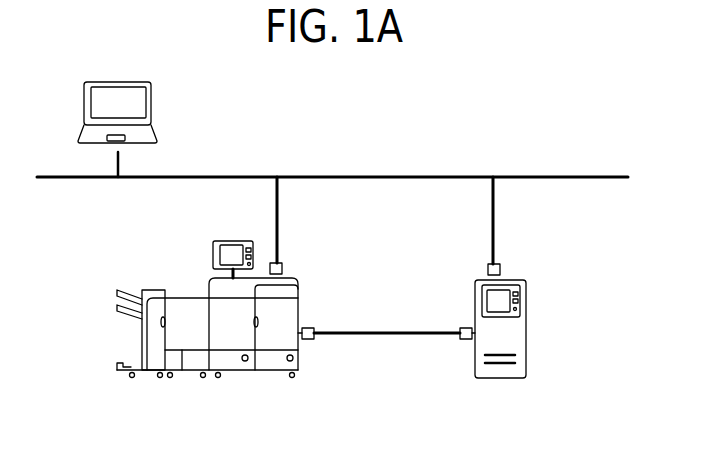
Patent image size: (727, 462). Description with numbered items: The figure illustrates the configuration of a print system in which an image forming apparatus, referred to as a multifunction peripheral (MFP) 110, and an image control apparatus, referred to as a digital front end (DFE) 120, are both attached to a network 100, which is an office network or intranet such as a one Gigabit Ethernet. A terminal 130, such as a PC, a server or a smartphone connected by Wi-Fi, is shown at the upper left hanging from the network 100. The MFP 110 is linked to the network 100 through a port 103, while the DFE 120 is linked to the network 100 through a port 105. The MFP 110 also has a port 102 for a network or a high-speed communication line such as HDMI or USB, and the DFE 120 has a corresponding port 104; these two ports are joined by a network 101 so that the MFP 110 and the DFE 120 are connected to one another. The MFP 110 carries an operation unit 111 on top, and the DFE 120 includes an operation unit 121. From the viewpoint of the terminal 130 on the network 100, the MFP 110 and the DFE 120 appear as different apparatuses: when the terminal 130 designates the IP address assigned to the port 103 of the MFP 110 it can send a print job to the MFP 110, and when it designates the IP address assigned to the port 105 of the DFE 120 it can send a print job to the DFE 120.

The network 100 is at (565, 177).
The network 101 is at (360, 331).
The port 102 is at (308, 327).
The port 103 is at (284, 269).
The port 104 is at (463, 327).
The port 105 is at (502, 269).
The multifunction peripheral (MFP) 110 is at (262, 389).
The operation unit 111 is at (226, 242).
The digital front end (DFE) 120 is at (495, 387).
The operation unit 121 is at (522, 292).
The terminal 130 is at (117, 82).